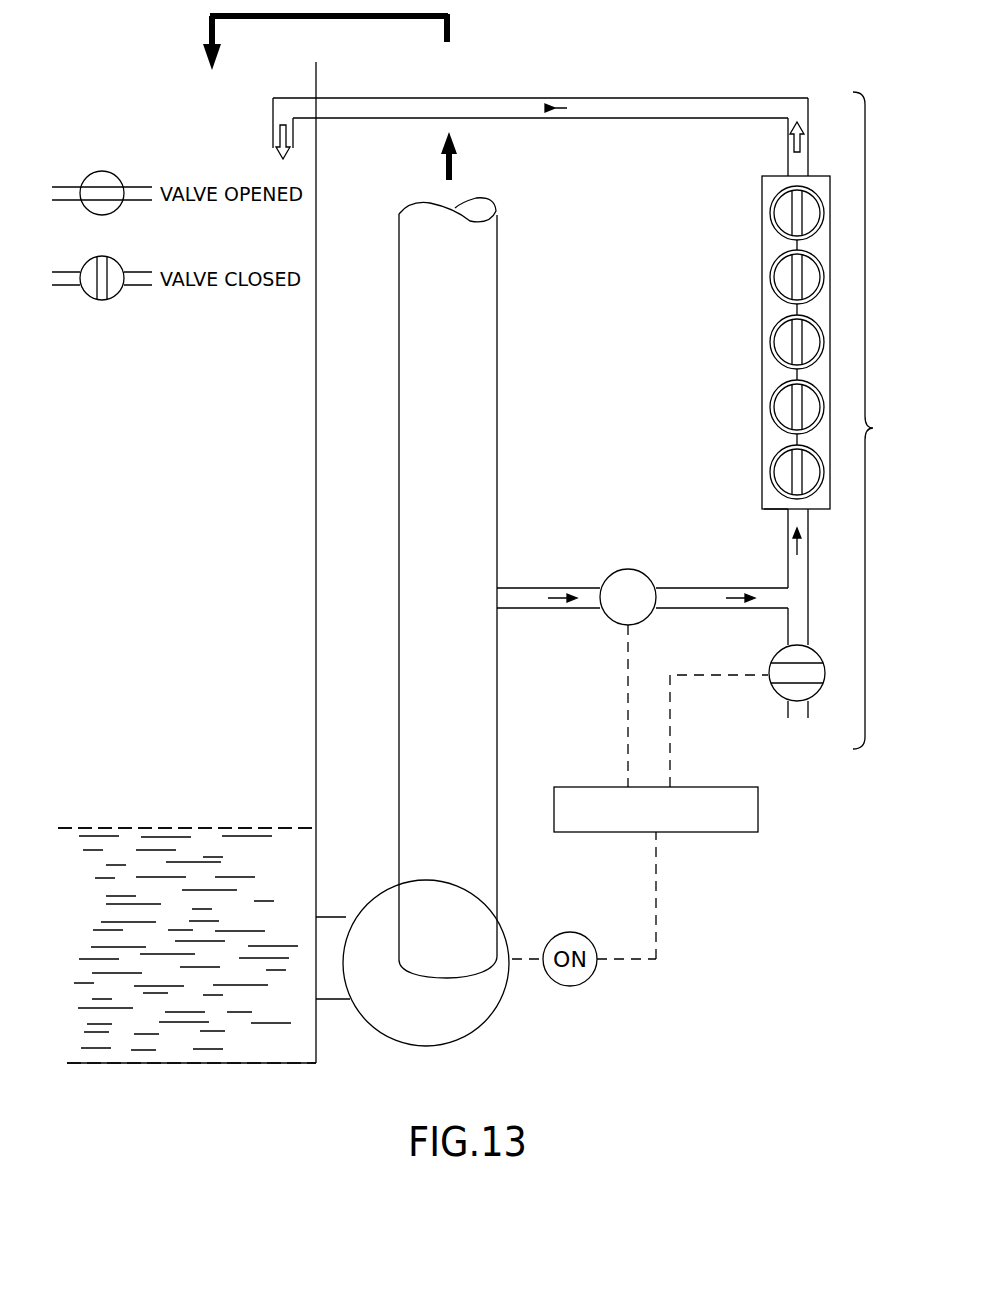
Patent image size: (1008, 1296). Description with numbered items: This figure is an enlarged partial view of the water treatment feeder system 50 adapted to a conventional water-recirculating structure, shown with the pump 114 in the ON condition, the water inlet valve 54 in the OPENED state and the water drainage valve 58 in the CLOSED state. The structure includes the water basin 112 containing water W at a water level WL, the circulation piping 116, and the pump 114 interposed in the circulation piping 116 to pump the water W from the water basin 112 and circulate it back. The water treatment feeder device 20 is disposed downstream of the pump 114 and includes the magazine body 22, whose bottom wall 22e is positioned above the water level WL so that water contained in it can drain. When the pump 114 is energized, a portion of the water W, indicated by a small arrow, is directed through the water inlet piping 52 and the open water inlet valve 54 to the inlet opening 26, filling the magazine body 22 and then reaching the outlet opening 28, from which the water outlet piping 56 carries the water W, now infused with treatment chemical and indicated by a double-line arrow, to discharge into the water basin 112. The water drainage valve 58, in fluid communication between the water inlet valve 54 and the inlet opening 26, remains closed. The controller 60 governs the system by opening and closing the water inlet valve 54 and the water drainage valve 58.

The water treatment feeder device 20 is at (762, 342).
The magazine body 22 is at (760, 384).
The bottom wall 22e is at (770, 509).
The inlet opening 26 is at (808, 509).
The outlet opening 28 is at (788, 176).
The water treatment feeder system 50 is at (883, 420).
The water inlet piping 52 is at (680, 588).
The water inlet valve 54 is at (610, 572).
The water outlet piping 56 is at (668, 97).
The water drainage valve 58 is at (819, 700).
The controller 60 is at (706, 832).
The water basin 112 is at (317, 886).
The pump 114 is at (458, 1013).
The circulation piping 116 is at (418, 548).
The water level WL is at (195, 828).
The water W is at (275, 962).